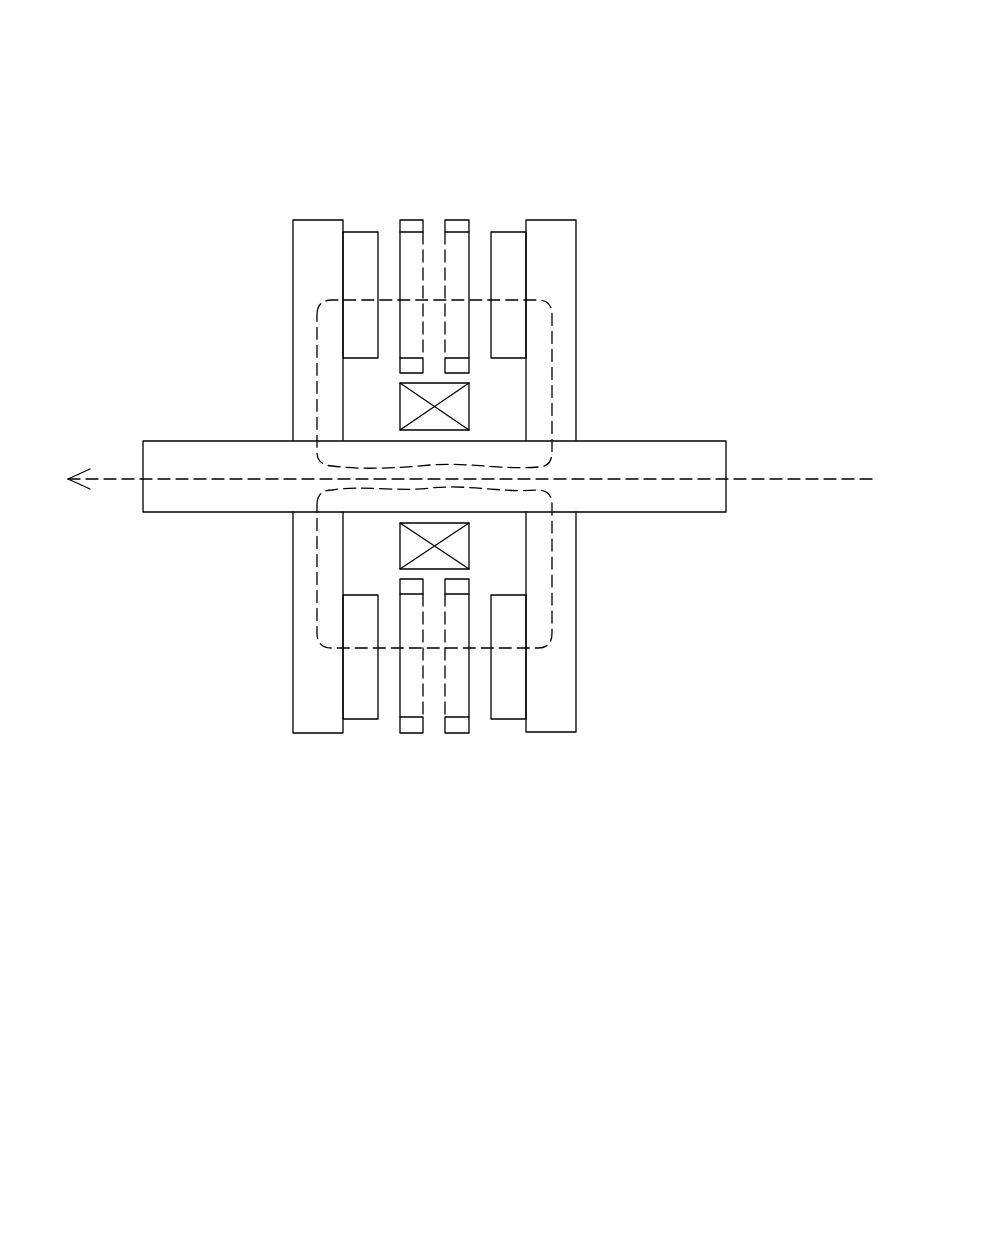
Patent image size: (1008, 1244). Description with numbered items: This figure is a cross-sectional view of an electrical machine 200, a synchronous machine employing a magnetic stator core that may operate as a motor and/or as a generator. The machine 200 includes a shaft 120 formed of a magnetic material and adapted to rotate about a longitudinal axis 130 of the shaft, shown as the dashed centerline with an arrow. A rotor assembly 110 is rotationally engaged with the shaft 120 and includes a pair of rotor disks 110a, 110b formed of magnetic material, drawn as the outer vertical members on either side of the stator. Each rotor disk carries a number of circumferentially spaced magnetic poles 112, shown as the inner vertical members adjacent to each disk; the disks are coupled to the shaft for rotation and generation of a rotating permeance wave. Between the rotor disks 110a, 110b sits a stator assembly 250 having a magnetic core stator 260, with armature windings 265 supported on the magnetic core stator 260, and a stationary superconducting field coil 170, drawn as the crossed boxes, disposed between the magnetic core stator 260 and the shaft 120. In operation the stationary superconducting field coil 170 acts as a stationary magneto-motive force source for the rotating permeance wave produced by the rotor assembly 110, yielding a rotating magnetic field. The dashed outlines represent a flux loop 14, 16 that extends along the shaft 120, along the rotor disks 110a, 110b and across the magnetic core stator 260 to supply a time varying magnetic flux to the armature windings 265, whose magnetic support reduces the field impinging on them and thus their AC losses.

The flux loop 14 is at (543, 362).
The flux loop 16 is at (543, 612).
The rotor assembly 110 is at (630, 183).
The rotor disk 110a is at (318, 240).
The rotor disk 110b is at (543, 240).
The magnetic poles 112 is at (357, 240).
The shaft 120 is at (700, 462).
The longitudinal axis 130 is at (110, 478).
The stationary superconducting field coil 170 is at (462, 543).
The electrical machine 200 is at (737, 279).
The stator assembly 250 is at (443, 165).
The magnetic core stator 260 is at (462, 248).
The armature windings 265 is at (457, 720).